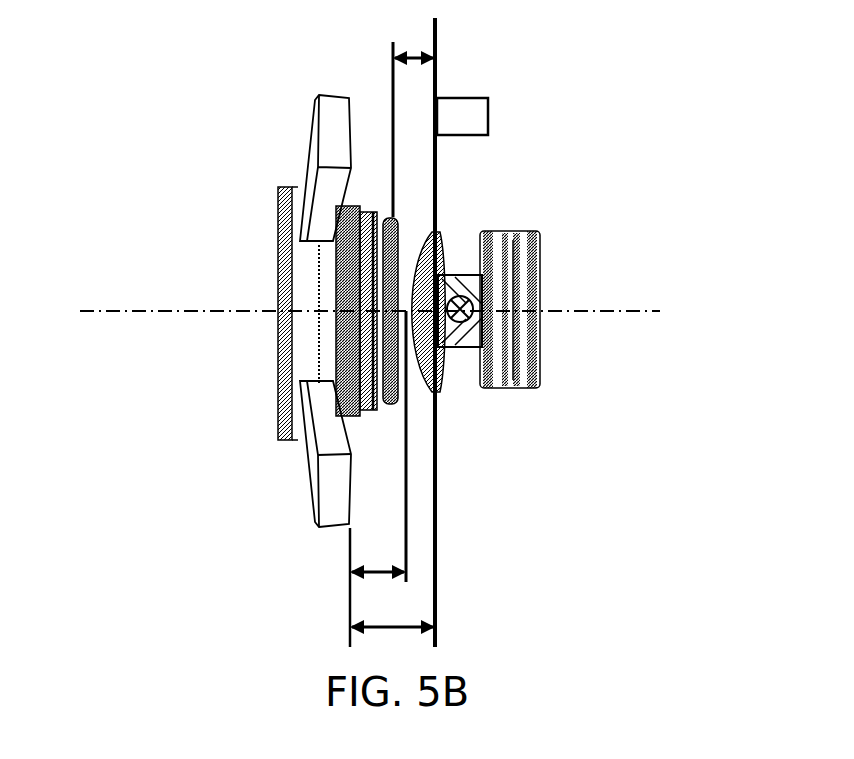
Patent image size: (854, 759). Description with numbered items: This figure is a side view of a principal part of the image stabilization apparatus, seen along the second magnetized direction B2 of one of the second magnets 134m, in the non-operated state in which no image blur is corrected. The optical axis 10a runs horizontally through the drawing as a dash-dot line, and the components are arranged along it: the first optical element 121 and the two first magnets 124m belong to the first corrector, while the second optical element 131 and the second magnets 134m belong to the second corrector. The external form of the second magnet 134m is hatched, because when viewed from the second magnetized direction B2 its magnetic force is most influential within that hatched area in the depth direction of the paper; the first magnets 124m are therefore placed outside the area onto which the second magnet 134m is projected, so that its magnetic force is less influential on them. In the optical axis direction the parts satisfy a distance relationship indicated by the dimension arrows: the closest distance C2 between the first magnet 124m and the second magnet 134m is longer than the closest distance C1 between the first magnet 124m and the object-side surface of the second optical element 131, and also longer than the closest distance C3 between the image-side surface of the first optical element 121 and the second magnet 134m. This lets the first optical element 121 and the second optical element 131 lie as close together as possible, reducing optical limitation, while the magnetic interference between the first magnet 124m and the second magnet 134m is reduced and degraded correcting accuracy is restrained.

The optical axis 10a is at (190, 311).
The first optical element 121 is at (298, 255).
The first magnet 124m is at (318, 150).
The second optical element 131 is at (440, 383).
The second magnet 134m is at (462, 122).
The second magnetized direction B2 is at (476, 302).
The closest distance between the first magnet and the second optical element C1 is at (378, 446).
The closest distance between the first magnet and the second magnet C2 is at (392, 332).
The closest distance between the first optical element and the second magnet C3 is at (414, 125).